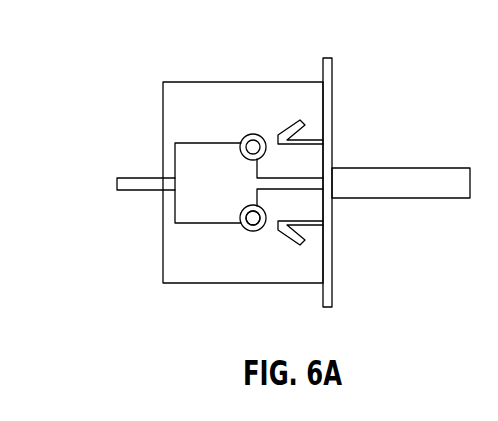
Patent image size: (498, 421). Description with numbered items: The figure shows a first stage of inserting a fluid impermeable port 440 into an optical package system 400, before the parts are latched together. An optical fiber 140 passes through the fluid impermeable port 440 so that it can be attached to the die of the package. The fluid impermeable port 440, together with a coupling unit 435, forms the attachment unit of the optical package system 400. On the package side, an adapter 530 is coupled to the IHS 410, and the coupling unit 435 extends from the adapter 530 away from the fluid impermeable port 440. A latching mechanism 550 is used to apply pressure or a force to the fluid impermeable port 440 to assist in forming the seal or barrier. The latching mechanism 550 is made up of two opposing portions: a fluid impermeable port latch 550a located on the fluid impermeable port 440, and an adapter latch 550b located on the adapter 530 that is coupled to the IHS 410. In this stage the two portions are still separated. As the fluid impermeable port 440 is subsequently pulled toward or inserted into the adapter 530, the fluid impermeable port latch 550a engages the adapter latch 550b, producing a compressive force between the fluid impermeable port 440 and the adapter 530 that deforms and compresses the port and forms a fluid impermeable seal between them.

The optical package system 400 is at (100, 38).
The IHS 410 is at (313, 110).
The adapter 530 is at (332, 65).
The coupling unit 435 is at (418, 168).
The optical fiber 140 is at (130, 189).
The fluid impermeable port 440 is at (218, 168).
The latching mechanism 550 is at (312, 236).
The fluid impermeable port latch 550a is at (250, 220).
The adapter latch 550b is at (307, 240).